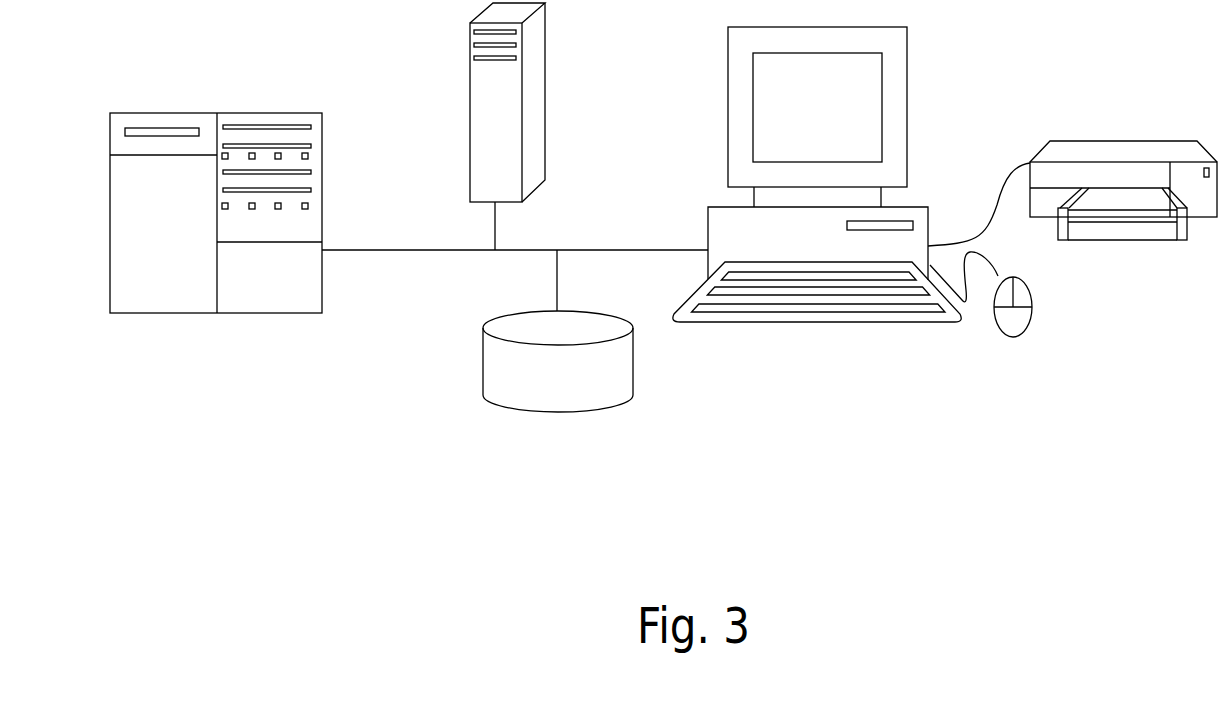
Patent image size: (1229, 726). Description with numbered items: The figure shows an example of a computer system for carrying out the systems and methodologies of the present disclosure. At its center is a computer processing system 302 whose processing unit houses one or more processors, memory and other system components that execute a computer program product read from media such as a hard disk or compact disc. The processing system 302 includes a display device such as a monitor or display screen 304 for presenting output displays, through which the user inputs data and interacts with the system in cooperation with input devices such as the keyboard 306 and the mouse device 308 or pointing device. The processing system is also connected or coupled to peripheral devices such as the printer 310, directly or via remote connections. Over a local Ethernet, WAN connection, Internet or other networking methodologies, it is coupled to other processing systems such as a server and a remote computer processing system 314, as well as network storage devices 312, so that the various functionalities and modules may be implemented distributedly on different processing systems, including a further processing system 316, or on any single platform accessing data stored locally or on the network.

The processing system 302 is at (712, 233).
The display screen 304 is at (907, 103).
The keyboard 306 is at (875, 322).
The mouse device 308 is at (1032, 323).
The printer 310 is at (1122, 141).
The network storage devices 312 is at (570, 411).
The remote computer processing system 314 is at (545, 90).
The mainframe computer 316 is at (258, 112).